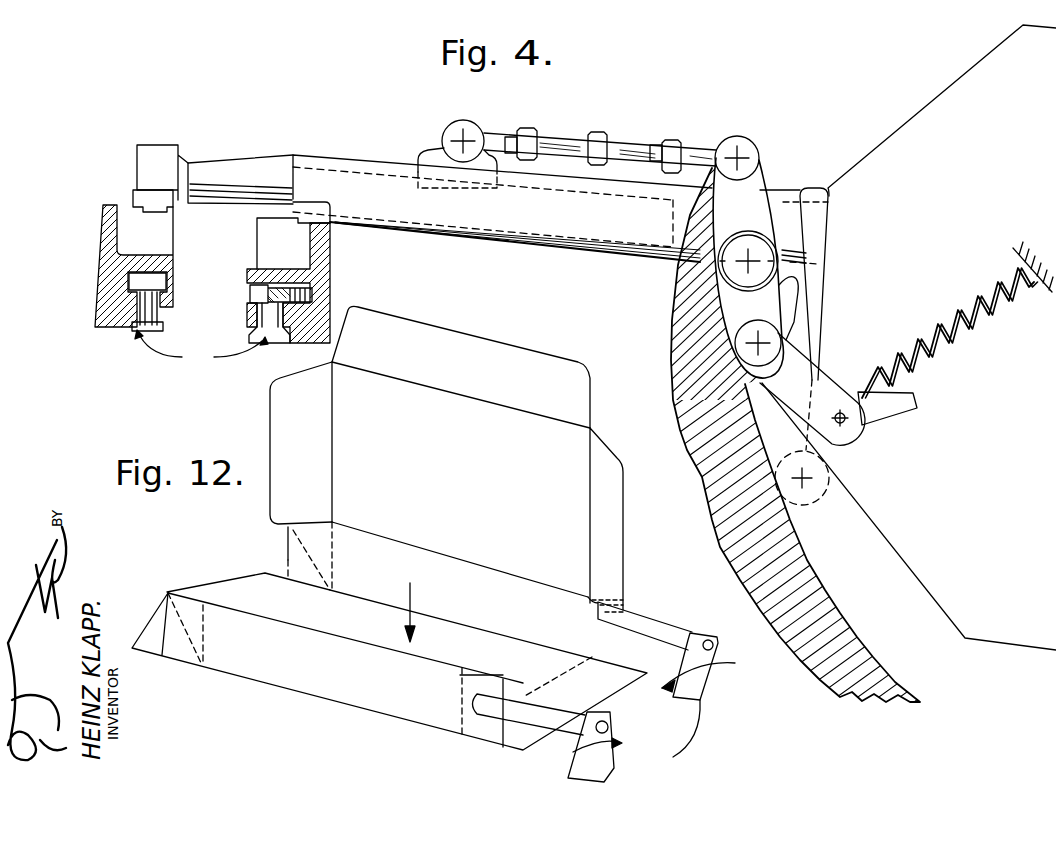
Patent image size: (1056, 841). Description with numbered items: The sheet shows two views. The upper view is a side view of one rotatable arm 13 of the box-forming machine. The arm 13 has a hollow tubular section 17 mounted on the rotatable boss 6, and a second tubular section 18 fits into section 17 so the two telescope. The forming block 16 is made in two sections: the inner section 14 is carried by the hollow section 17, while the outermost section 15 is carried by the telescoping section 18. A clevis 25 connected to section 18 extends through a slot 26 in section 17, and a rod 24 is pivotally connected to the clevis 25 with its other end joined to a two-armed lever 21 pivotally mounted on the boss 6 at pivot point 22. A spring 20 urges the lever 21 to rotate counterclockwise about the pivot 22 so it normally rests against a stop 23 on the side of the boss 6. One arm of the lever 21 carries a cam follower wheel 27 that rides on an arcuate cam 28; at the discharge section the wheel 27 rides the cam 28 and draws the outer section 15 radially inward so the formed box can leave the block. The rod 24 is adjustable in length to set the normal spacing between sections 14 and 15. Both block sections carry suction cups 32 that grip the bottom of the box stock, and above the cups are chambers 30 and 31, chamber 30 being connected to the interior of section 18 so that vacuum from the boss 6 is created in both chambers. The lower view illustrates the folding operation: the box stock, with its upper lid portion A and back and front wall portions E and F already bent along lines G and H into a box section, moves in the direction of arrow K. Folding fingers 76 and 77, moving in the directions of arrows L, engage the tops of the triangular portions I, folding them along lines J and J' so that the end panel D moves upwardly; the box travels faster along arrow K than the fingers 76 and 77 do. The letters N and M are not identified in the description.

In FIG. 4, the rotatable boss 6 is at (932, 108).
In FIG. 4, the rotatable arm 13 is at (460, 255).
In FIG. 4, the inner forming block section 14 is at (320, 283).
In FIG. 4, the outer forming block section 15 is at (100, 260).
In FIG. 4, the forming block 16 is at (206, 330).
In FIG. 4, the hollow tubular section 17 is at (608, 252).
In FIG. 4, the telescoping tubular section 18 is at (228, 160).
In FIG. 4, the spring 20 is at (938, 322).
In FIG. 4, the two-armed lever 21 is at (790, 240).
In FIG. 4, the pivot point 22 is at (775, 347).
In FIG. 4, the stop 23 is at (907, 412).
In FIG. 4, the rod 24 is at (568, 137).
In FIG. 4, the clevis 25 is at (440, 152).
In FIG. 4, the slot 26 is at (367, 170).
In FIG. 4, the cam follower wheel 27 is at (785, 292).
In FIG. 4, the arcuate cam 28 is at (805, 578).
In FIG. 4, the chamber 30 is at (129, 289).
In FIG. 4, the chamber 31 is at (268, 291).
In FIG. 4, the suction cups 32 is at (262, 336).
In FIG. 12, the folding finger 76 is at (673, 630).
In FIG. 12, the folding finger 77 is at (577, 712).
In FIG. 12, the upper lid portion A is at (465, 472).
In FIG. 12, the left side wall N is at (270, 417).
In FIG. 12, the right side wall M is at (608, 523).
In FIG. 12, the back wall portion E is at (378, 558).
In FIG. 12, the front wall portion F is at (307, 680).
In FIG. 12, the fold line H is at (370, 712).
In FIG. 12, the fold line G is at (517, 643).
In FIG. 12, the arrow indicating box movement K is at (417, 601).
In FIG. 12, the fold triangle portions I is at (463, 689).
In FIG. 12, the fold line J is at (608, 648).
In FIG. 12, the arrows indicating finger movement L is at (608, 747).
In FIG. 12, the end wall portion D is at (621, 700).